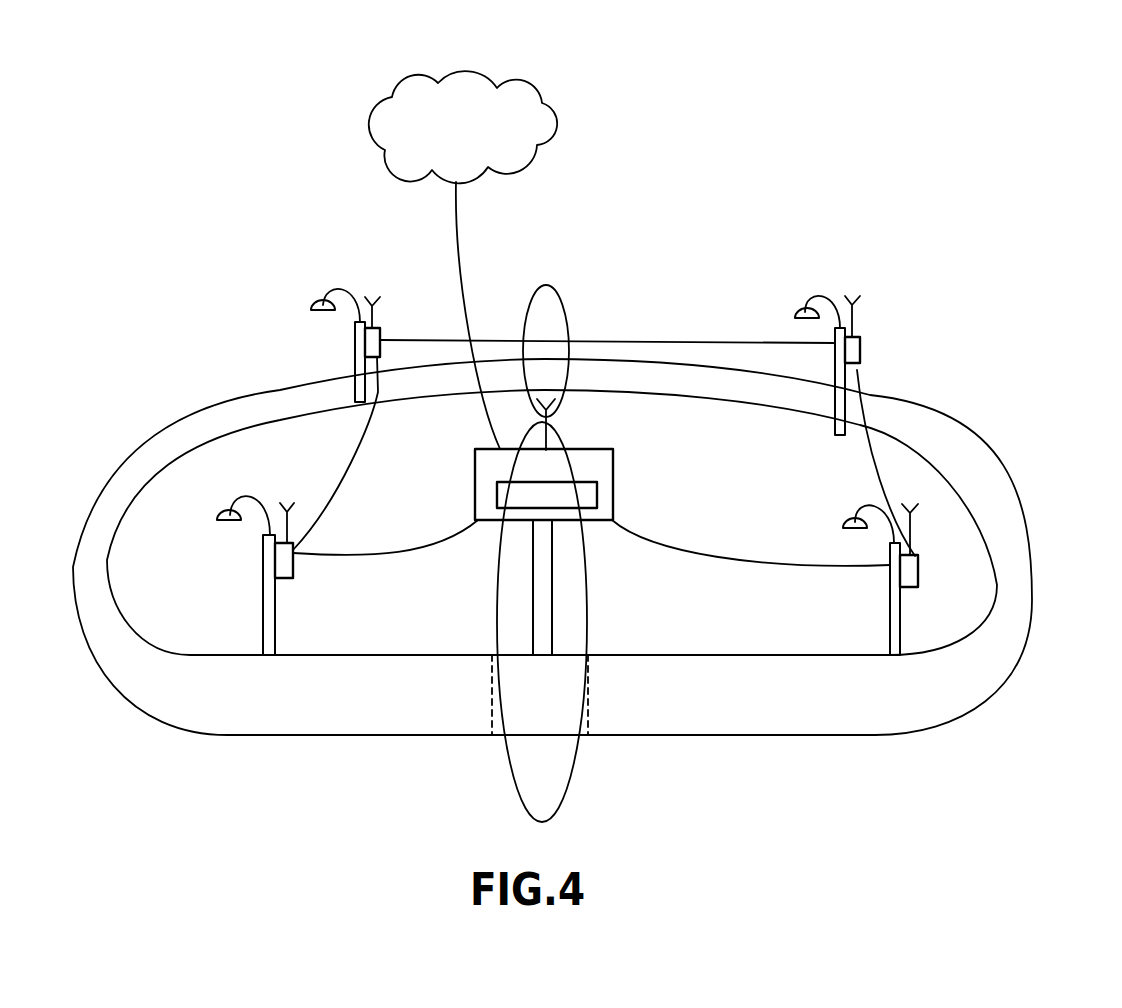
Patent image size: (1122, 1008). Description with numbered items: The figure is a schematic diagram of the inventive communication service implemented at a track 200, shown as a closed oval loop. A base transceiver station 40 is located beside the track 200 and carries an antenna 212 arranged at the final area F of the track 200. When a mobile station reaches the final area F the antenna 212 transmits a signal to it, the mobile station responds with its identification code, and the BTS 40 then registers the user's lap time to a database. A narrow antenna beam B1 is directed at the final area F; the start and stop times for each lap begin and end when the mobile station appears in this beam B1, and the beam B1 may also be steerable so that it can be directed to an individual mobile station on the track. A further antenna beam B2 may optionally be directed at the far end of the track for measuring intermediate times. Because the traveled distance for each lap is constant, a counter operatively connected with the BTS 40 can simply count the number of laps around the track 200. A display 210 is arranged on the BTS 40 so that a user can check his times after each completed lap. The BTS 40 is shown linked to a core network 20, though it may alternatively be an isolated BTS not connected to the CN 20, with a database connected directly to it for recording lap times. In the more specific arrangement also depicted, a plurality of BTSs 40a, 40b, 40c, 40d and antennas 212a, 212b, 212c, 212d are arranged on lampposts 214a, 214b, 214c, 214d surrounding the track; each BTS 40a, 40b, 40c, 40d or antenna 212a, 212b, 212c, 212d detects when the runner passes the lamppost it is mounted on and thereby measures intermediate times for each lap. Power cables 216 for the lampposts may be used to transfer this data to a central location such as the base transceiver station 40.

The core network 20 is at (557, 110).
The track 200 is at (1037, 383).
The base transceiver station 40 is at (613, 468).
The display 210 is at (590, 490).
The antenna 212 is at (548, 435).
The power cables 216 is at (684, 345).
The lamppost 214a is at (890, 610).
The lamppost 214b is at (840, 372).
The lamppost 214c is at (356, 356).
The lamppost 214d is at (267, 602).
The base transceiver station 40a is at (918, 576).
The base transceiver station 40b is at (860, 357).
The base transceiver station 40c is at (380, 347).
The base transceiver station 40d is at (293, 568).
The antenna 212a is at (910, 512).
The antenna 212b is at (852, 303).
The antenna 212c is at (375, 302).
The antenna 212d is at (283, 505).
The antenna beam B1 is at (548, 797).
The antenna beam B2 is at (543, 315).
The final area F is at (570, 688).